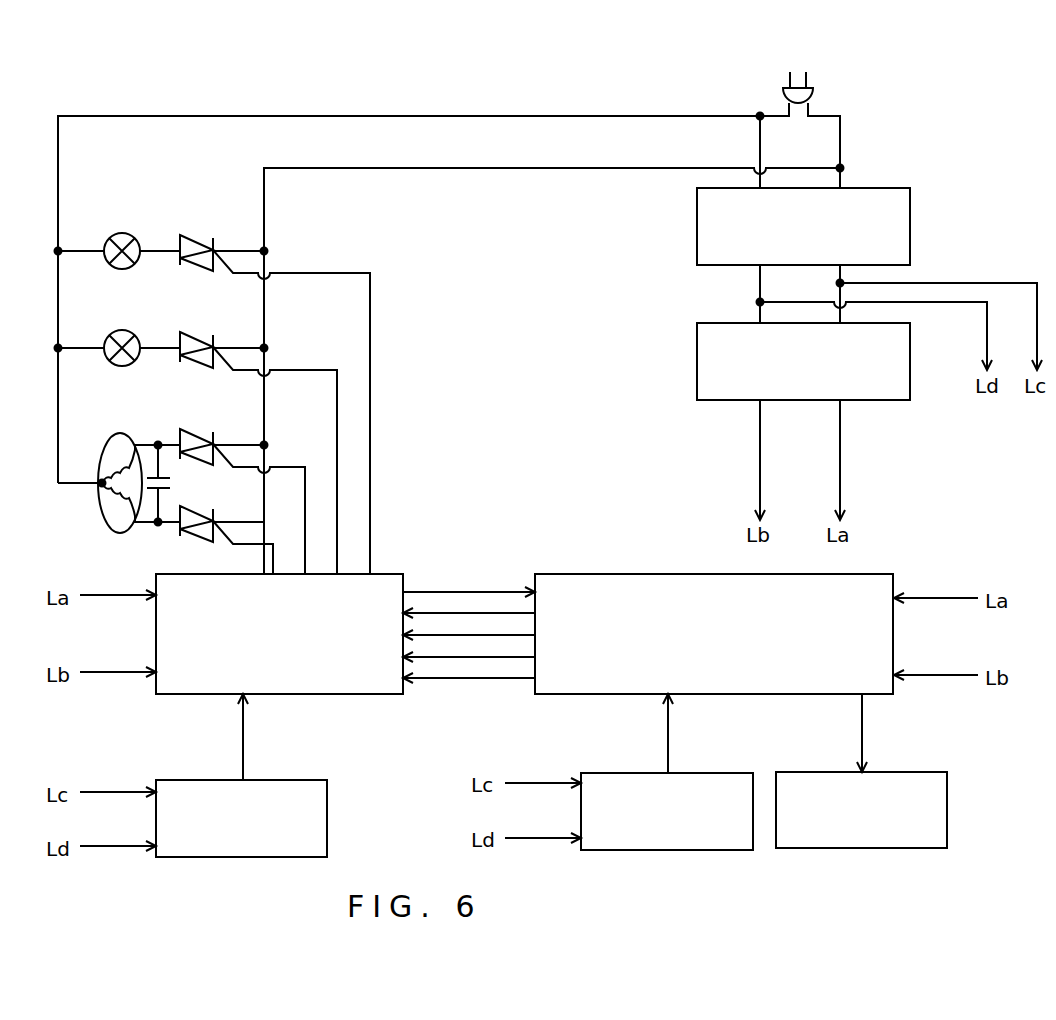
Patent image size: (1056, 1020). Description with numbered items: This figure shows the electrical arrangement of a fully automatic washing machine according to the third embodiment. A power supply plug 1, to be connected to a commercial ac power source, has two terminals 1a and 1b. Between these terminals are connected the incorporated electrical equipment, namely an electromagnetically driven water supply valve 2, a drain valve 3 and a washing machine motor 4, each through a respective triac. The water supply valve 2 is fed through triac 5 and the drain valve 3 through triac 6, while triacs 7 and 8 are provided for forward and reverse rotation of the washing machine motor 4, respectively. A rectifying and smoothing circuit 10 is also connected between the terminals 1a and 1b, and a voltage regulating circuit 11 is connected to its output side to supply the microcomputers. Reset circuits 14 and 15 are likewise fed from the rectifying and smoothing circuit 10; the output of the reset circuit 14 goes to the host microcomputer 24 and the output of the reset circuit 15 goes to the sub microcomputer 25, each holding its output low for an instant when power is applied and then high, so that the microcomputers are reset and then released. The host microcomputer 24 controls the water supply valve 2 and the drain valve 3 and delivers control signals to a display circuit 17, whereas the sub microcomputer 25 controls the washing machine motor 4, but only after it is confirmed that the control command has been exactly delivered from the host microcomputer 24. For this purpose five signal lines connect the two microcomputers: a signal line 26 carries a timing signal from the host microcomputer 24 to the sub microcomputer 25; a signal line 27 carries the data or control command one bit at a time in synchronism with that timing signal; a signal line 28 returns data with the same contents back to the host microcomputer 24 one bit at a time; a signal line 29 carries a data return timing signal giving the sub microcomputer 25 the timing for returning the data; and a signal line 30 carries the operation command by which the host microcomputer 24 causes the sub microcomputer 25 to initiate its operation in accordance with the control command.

The power supply plug 1 is at (818, 85).
The terminal 1a is at (783, 113).
The terminal 1b is at (823, 113).
The water supply valve 2 is at (120, 233).
The drain valve 3 is at (122, 330).
The washing machine motor 4 is at (112, 528).
The triac 5 is at (203, 233).
The triac 6 is at (203, 332).
The triac 7 is at (203, 427).
The triac 8 is at (203, 506).
The rectifying and smoothing circuit 10 is at (865, 188).
The voltage regulating circuit 11 is at (910, 372).
The reset circuit 14 is at (612, 773).
The reset circuit 15 is at (327, 806).
The display circuit 17 is at (947, 805).
The host microcomputer 24 is at (883, 575).
The sub microcomputer 25 is at (178, 696).
The signal line 26 is at (432, 680).
The signal line 27 is at (520, 657).
The signal line 28 is at (495, 592).
The signal line 29 is at (480, 635).
The signal line 30 is at (436, 612).